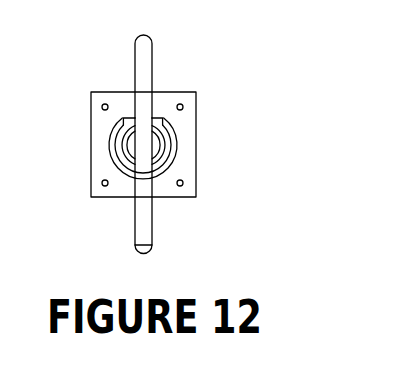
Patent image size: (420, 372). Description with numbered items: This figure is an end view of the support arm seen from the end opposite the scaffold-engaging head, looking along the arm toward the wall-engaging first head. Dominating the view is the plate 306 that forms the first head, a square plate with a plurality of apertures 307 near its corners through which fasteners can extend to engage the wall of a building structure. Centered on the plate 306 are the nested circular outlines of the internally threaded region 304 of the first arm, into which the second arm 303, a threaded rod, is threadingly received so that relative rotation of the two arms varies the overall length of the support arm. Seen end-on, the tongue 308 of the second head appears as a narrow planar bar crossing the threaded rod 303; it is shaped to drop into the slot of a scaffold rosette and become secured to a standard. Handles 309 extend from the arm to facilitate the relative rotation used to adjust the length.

The second arm 303 is at (126, 151).
The internally threaded region 304 is at (112, 136).
The plate 306 is at (186, 132).
The apertures 307 is at (183, 107).
The tongue 308 is at (146, 215).
The handles 309 is at (146, 57).